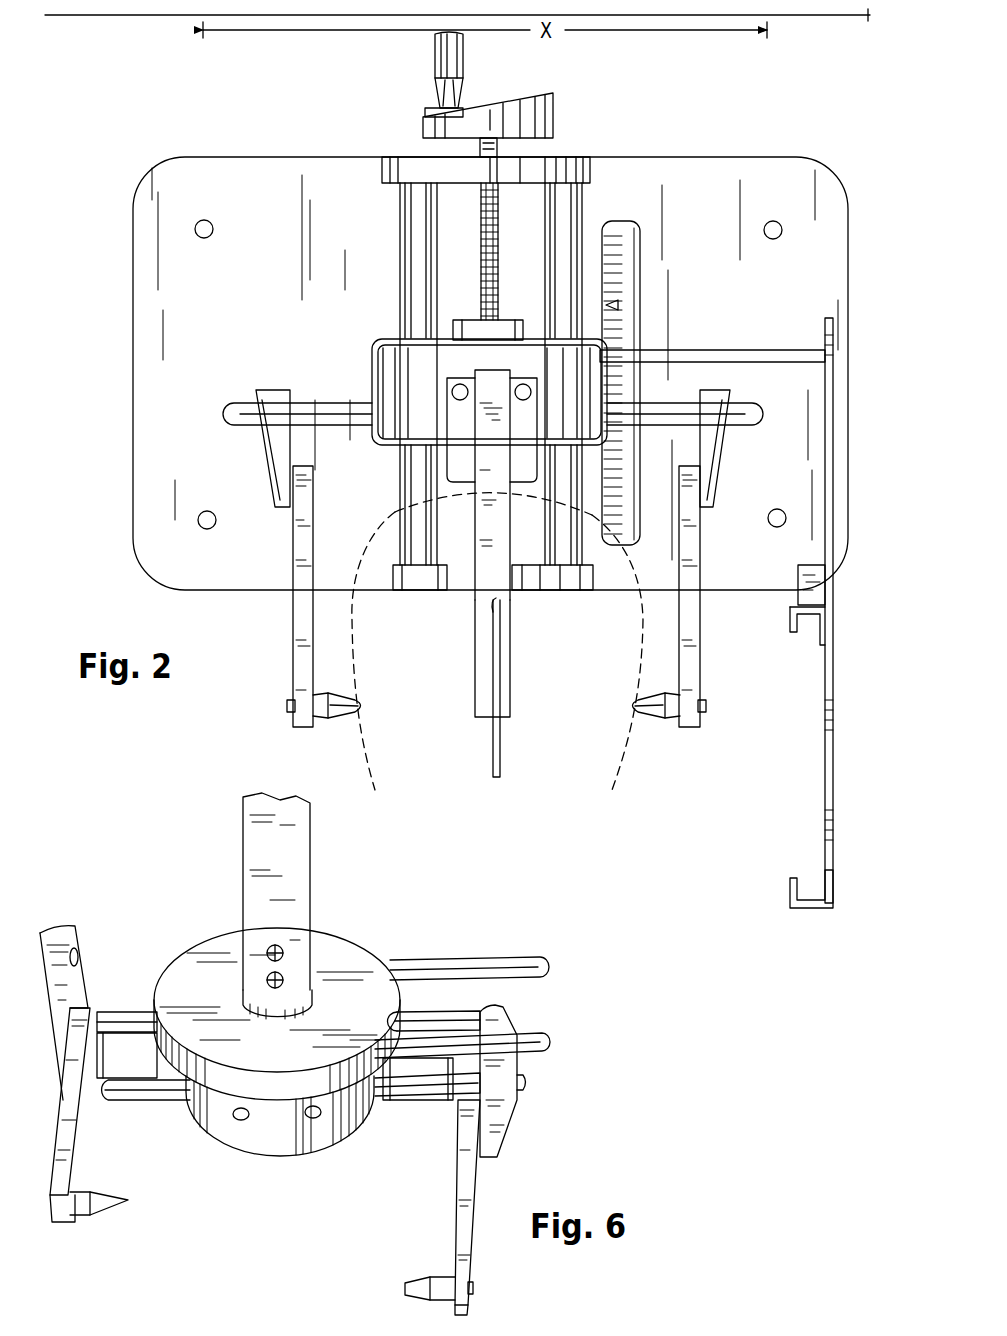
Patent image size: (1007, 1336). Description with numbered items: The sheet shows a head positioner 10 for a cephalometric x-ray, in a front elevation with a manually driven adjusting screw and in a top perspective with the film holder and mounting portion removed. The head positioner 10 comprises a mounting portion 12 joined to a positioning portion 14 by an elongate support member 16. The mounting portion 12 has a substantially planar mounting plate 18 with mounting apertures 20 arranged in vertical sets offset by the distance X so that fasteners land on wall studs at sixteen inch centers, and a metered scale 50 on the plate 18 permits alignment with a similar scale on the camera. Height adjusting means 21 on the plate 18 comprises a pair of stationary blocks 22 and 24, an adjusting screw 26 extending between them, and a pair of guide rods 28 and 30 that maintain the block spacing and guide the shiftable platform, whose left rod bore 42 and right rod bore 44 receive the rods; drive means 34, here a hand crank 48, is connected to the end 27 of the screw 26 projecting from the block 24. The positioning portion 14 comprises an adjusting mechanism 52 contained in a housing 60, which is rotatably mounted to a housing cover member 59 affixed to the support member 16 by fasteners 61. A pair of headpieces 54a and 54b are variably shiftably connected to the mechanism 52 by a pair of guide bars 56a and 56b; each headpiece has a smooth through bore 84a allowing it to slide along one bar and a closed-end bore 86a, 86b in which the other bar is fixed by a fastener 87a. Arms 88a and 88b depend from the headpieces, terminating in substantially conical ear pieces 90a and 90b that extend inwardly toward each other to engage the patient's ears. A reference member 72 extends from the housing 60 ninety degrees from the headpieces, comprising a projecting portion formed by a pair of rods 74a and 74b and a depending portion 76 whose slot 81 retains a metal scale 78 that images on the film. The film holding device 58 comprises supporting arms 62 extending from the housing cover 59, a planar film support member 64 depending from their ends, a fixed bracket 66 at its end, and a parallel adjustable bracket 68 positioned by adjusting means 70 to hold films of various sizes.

In FIG. 2, the head positioner 10 is at (125, 345).
In FIG. 6, the head positioner 10 is at (135, 855).
In FIG. 2, the mounting portion 12 is at (607, 158).
In FIG. 2, the positioning portion 14 is at (362, 347).
In FIG. 6, the positioning portion 14 is at (438, 920).
In FIG. 2, the elongate support member 16 is at (470, 335).
In FIG. 6, the elongate support member 16 is at (295, 875).
In FIG. 2, the mounting plate 18 is at (232, 572).
In FIG. 2, the mounting apertures 20 is at (204, 219).
In FIG. 2, the height adjusting means 21 is at (392, 241).
In FIG. 2, the stationary block 22 is at (432, 597).
In FIG. 2, the stationary block 24 is at (582, 158).
In FIG. 2, the adjusting screw 26 is at (482, 200).
In FIG. 2, the end of the screw 27 is at (480, 148).
In FIG. 2, the guide rod 28 is at (410, 258).
In FIG. 2, the guide rod 30 is at (580, 205).
In FIG. 2, the drive means 34 is at (427, 110).
In FIG. 2, the left rod bore 42 is at (455, 326).
In FIG. 2, the right rod bore 44 is at (612, 305).
In FIG. 2, the hand crank 48 is at (537, 117).
In FIG. 2, the metered scale 50 is at (635, 221).
In FIG. 2, the adjusting mechanism 52 is at (372, 376).
In FIG. 6, the adjusting mechanism 52 is at (182, 975).
In FIG. 2, the headpiece 54a is at (275, 447).
In FIG. 6, the headpiece 54a is at (62, 928).
In FIG. 2, the headpiece 54b is at (712, 462).
In FIG. 6, the headpiece 54b is at (520, 1068).
In FIG. 2, the guide bar 56a is at (225, 413).
In FIG. 6, the guide bar 56a is at (415, 1097).
In FIG. 6, the guide bar 56b is at (478, 1010).
In FIG. 2, the film holding device 58 is at (828, 342).
In FIG. 6, the housing cover member 59 is at (366, 948).
In FIG. 2, the housing 60 is at (390, 446).
In FIG. 6, the housing 60 is at (313, 1158).
In FIG. 6, the fasteners 61 is at (282, 976).
In FIG. 2, the supporting arms 62 is at (715, 350).
In FIG. 6, the supporting arms 62 is at (551, 1040).
In FIG. 2, the film support member 64 is at (824, 384).
In FIG. 2, the fixed bracket 66 is at (812, 886).
In FIG. 2, the adjustable bracket 68 is at (810, 640).
In FIG. 2, the adjusting means 70 is at (815, 598).
In FIG. 2, the reference member 72 is at (476, 645).
In FIG. 2, the rod 74a is at (452, 392).
In FIG. 2, the rod 74b is at (523, 384).
In FIG. 2, the depending portion 76 is at (503, 575).
In FIG. 2, the scale 78 is at (501, 748).
In FIG. 2, the slot 81 is at (497, 612).
In FIG. 6, the through bore 84a is at (85, 953).
In FIG. 6, the closed-end bore 86a is at (127, 1055).
In FIG. 6, the closed-end bore 86b is at (448, 1108).
In FIG. 2, the fastener 87a is at (762, 424).
In FIG. 6, the fastener 87a is at (528, 1085).
In FIG. 2, the arm 88a is at (298, 625).
In FIG. 6, the arm 88a is at (85, 1145).
In FIG. 2, the arm 88b is at (700, 625).
In FIG. 6, the arm 88b is at (437, 1207).
In FIG. 2, the ear piece 90a is at (349, 720).
In FIG. 6, the ear piece 90a is at (120, 1195).
In FIG. 2, the ear piece 90b is at (652, 722).
In FIG. 6, the ear piece 90b is at (410, 1282).